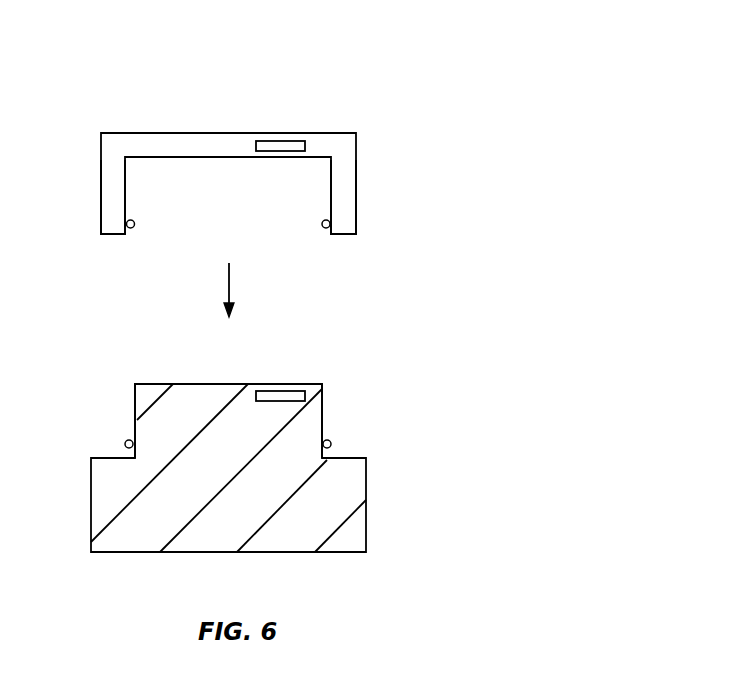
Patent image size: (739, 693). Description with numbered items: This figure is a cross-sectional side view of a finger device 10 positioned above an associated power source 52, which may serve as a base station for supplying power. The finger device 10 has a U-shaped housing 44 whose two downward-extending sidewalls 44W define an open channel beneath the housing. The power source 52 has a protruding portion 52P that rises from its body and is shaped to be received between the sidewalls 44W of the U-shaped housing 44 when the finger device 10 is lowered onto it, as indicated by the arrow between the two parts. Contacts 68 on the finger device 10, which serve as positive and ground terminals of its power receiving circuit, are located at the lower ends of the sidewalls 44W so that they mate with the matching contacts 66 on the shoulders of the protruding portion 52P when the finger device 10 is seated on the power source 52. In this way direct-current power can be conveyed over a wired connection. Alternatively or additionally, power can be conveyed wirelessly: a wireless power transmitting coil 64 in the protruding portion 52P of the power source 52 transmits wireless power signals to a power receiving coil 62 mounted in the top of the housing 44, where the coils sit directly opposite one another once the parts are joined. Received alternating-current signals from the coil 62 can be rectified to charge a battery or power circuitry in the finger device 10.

The finger device 10 is at (353, 78).
The U-shaped housing 44 is at (149, 133).
The sidewalls 44W is at (110, 190).
The power receiving coil 62 is at (284, 141).
The contacts 68 is at (131, 229).
The power source 52 is at (353, 491).
The protruding portion 52P is at (180, 397).
The wireless power transmitting coil 64 is at (284, 391).
The contacts 66 is at (125, 444).